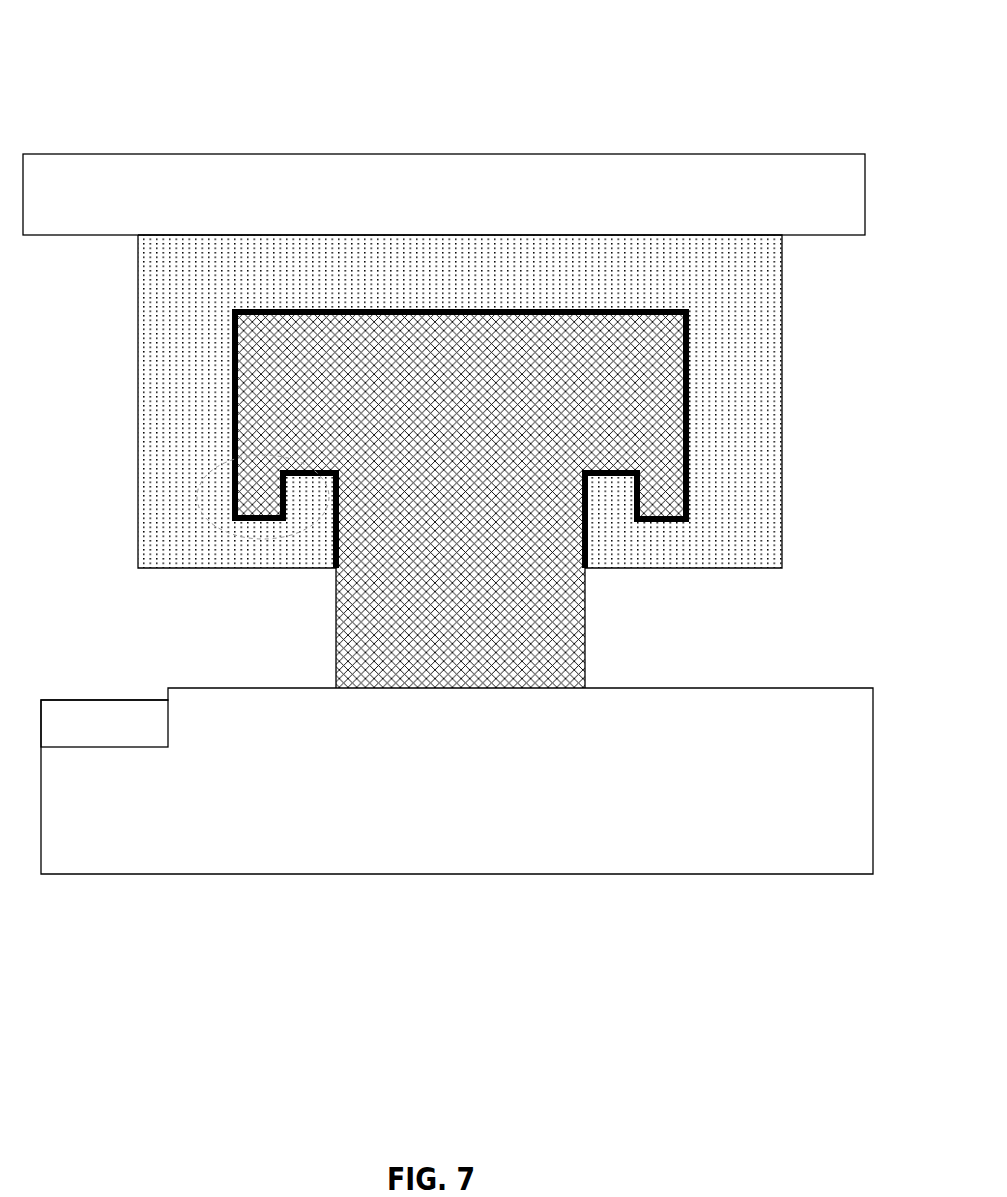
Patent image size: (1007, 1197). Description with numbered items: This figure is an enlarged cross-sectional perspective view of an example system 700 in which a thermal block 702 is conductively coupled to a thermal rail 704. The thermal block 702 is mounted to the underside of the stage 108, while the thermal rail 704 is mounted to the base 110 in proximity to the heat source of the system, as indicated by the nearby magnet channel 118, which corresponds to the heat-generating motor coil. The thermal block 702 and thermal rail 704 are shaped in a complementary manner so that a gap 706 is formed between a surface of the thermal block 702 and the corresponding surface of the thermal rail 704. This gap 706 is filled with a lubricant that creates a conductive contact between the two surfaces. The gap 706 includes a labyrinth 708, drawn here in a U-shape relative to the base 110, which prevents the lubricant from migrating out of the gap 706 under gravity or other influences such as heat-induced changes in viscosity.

The system 700 is at (200, 56).
The stage 108 is at (643, 154).
The thermal block 702 is at (720, 568).
The thermal rail 704 is at (585, 632).
The gap 706 is at (232, 430).
The labyrinth 708 is at (270, 537).
The base 110 is at (757, 874).
The magnet channel 118 is at (108, 747).